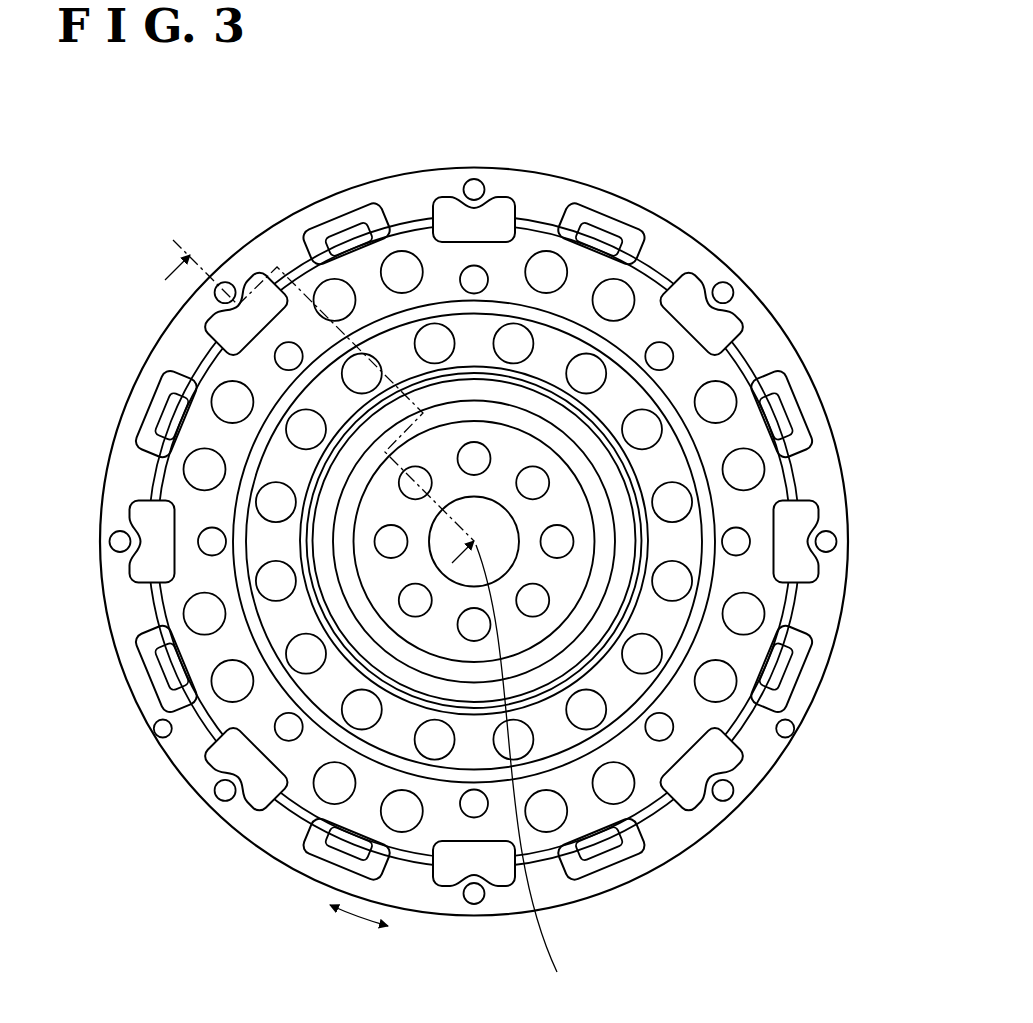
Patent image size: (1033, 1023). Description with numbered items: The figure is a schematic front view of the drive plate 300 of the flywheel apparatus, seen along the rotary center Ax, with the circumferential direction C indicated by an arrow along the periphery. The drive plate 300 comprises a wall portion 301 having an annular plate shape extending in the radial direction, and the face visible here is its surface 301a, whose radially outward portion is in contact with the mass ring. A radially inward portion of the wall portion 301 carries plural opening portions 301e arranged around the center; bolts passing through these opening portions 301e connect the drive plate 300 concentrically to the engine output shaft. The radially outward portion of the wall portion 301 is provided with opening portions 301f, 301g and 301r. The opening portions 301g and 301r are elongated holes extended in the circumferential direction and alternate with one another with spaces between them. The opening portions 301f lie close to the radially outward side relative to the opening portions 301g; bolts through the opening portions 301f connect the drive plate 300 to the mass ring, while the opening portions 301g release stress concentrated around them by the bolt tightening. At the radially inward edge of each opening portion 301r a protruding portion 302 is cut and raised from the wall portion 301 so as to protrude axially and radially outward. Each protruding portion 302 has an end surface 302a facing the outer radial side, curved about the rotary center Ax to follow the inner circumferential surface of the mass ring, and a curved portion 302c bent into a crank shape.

The drive plate 300 is at (652, 140).
The wall portion 301 is at (637, 337).
The surface 301a is at (520, 180).
The opening portions 301e is at (398, 485).
The opening portions 301f is at (224, 281).
The opening portions 301g is at (212, 311).
The opening portions 301r is at (368, 214).
The protruding portions 302 is at (782, 420).
The end surface 302a is at (345, 205).
The curved portion 302c is at (412, 205).
The rotary center Ax is at (522, 773).
The direction C is at (359, 929).